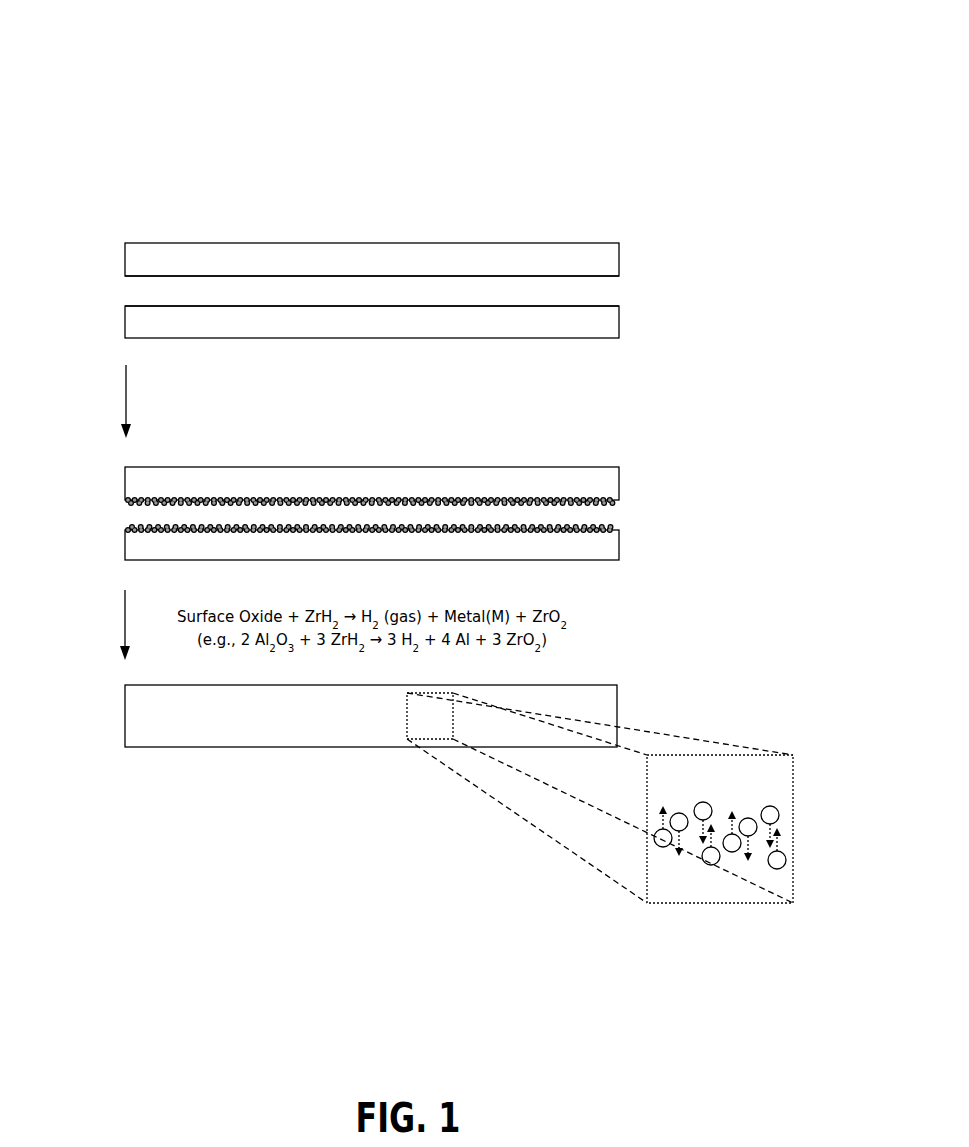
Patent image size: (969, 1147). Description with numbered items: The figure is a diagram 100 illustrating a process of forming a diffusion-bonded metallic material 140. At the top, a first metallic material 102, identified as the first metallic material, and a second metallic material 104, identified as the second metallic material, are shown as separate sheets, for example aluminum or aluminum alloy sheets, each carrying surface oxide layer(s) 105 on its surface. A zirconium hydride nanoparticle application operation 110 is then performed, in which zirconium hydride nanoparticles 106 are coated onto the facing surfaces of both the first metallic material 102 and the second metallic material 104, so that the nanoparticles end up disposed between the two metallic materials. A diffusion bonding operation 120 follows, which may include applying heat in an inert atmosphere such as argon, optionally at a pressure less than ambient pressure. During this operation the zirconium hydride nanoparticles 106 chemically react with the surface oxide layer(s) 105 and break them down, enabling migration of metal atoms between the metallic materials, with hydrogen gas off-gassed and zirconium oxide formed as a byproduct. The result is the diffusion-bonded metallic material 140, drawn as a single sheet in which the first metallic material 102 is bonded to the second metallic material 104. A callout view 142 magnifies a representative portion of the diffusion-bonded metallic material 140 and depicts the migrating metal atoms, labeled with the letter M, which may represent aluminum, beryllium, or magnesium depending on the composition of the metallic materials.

The diagram 100 is at (78, 52).
The first metallic material 102 is at (464, 433).
The second metallic material 104 is at (464, 371).
The surface oxide layer(s) 105 is at (331, 297).
The ZrH2 nanoparticles 106 is at (604, 513).
The ZrH2 nanoparticle application operation 110 is at (73, 403).
The diffusion bonding operation 120 is at (71, 625).
The diffusion-bonded metallic material 140 is at (464, 793).
The callout view 142 is at (717, 903).